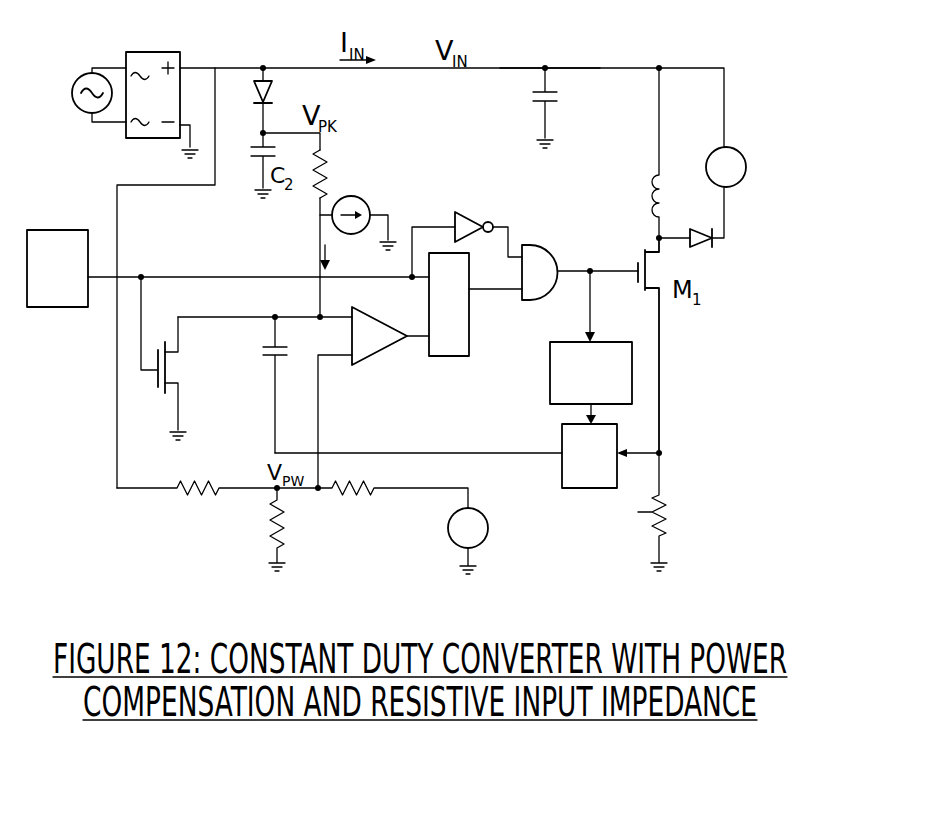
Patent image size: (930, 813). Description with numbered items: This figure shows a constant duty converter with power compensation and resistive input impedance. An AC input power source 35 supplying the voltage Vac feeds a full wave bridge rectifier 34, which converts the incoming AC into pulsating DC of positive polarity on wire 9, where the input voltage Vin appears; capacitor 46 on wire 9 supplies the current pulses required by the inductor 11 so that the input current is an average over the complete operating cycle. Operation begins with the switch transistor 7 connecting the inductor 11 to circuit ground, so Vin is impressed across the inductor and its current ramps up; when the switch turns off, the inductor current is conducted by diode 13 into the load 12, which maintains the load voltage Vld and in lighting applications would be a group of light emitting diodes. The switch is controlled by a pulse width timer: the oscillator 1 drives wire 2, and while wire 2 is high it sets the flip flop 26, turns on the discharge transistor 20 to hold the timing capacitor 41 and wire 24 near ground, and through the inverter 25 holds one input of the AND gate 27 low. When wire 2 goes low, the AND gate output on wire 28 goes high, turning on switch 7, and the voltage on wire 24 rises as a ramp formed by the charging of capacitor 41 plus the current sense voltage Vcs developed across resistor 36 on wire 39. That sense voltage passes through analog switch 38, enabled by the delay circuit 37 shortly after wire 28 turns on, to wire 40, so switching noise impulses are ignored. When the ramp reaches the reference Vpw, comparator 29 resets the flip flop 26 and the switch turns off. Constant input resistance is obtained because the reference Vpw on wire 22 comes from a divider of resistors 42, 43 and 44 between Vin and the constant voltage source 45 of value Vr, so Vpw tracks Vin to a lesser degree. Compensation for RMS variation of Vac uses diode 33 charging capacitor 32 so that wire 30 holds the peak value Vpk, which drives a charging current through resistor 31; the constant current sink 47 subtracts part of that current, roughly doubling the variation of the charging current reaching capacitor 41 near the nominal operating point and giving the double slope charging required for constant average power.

The oscillator 1 is at (62, 228).
The oscillator output wire 2 is at (190, 276).
The switch transistor M1 7 is at (639, 288).
The input voltage wire 9 is at (517, 68).
The inductor 11 is at (662, 206).
The load source Vld 12 is at (705, 160).
The diode D 13 is at (714, 247).
The discharge transistor M2 20 is at (164, 388).
The comparator reference wire 22 is at (318, 408).
The timing node wire 24 is at (245, 313).
The inverter 25 is at (455, 214).
The flip flop 26 is at (470, 338).
The AND gate 27 is at (546, 244).
The AND gate output wire 28 is at (589, 266).
The comparator 29 is at (373, 356).
The peak voltage wire 30 is at (322, 140).
The resistor R1 31 is at (306, 203).
The capacitor C2 32 is at (255, 166).
The diode D2 33 is at (258, 102).
The rectifier 34 is at (160, 52).
The AC input power source Vac 35 is at (75, 75).
The resistor Rcs 36 is at (654, 514).
The delay circuit 37 is at (558, 408).
The analog switch 38 is at (560, 460).
The current sense wire 39 is at (662, 428).
The comparator input wire 40 is at (480, 453).
The capacitor C1 41 is at (283, 357).
The resistor R2 42 is at (198, 478).
The resistor R3 43 is at (376, 485).
The resistor R4 44 is at (268, 525).
The reference voltage source Vr 45 is at (447, 528).
The capacitor C3 46 is at (537, 101).
The constant current sink i2 47 is at (365, 202).